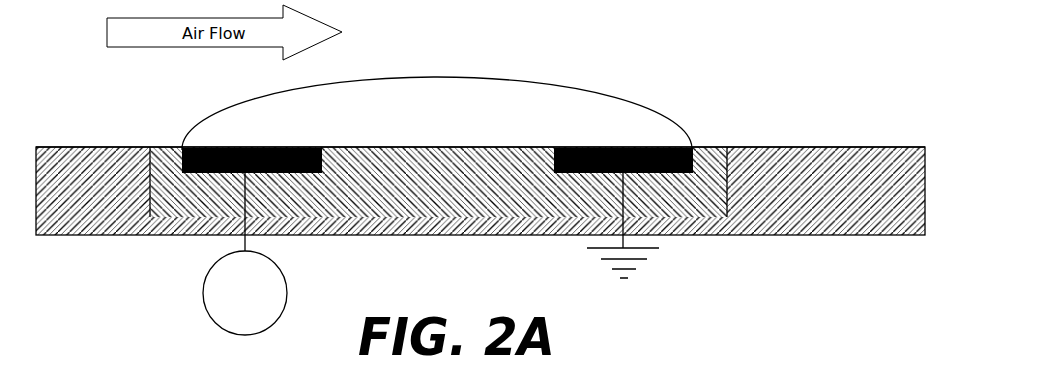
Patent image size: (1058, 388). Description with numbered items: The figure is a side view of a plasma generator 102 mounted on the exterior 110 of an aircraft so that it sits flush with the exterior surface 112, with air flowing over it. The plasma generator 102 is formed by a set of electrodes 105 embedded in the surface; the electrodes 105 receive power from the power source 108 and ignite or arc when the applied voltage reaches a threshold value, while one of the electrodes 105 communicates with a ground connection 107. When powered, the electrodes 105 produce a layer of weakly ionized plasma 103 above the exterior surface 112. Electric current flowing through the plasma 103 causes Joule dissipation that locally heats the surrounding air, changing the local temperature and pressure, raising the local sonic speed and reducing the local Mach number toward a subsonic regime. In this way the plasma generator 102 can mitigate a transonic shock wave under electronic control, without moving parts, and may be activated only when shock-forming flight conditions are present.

The plasma generator 102 is at (182, 148).
The plasma 103 is at (437, 113).
The set of electrodes 105 is at (585, 173).
The ground connection 107 is at (628, 182).
The power source 108 is at (245, 254).
The exterior 110 is at (857, 236).
The exterior surface 112 is at (825, 147).